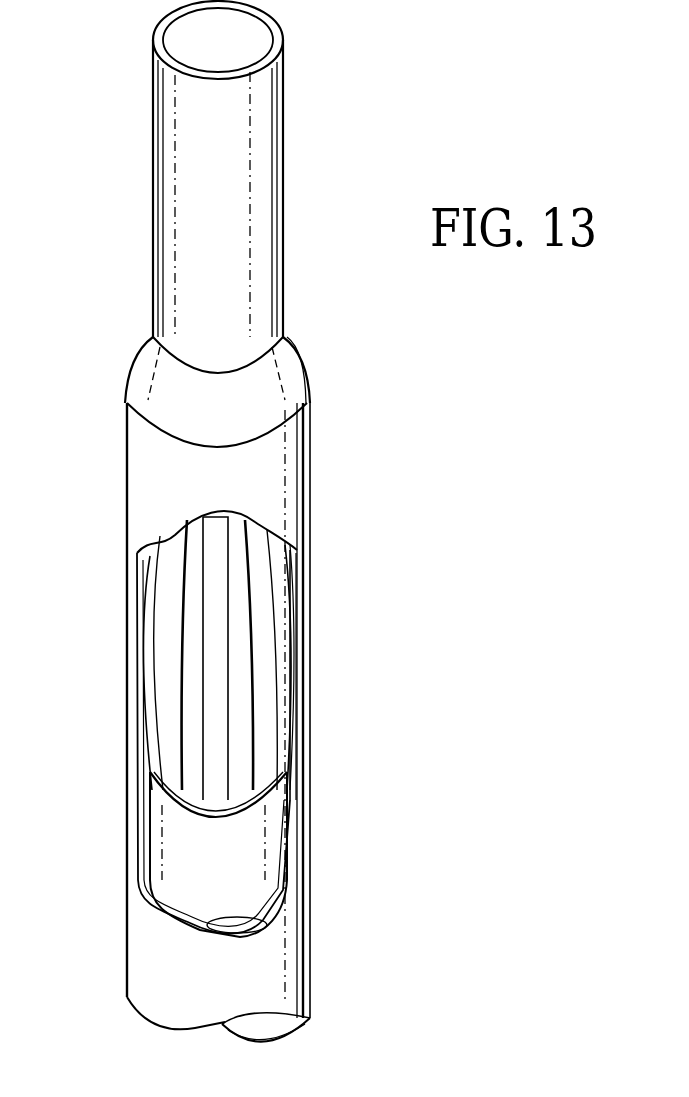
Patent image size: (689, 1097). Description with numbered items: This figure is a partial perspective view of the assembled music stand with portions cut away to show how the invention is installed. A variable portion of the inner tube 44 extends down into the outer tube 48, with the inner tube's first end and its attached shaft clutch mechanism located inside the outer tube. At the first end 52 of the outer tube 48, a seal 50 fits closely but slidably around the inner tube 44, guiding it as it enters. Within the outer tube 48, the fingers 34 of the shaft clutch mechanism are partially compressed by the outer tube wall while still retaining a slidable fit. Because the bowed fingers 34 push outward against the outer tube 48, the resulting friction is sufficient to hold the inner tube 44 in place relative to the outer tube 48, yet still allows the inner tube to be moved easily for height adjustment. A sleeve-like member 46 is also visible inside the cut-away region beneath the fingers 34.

The fingers 34 is at (177, 720).
The inner tube 44 is at (292, 251).
The sleeve 46 is at (168, 845).
The outer tube 48 is at (312, 962).
The seal 50 is at (305, 372).
The first end 52 is at (312, 403).